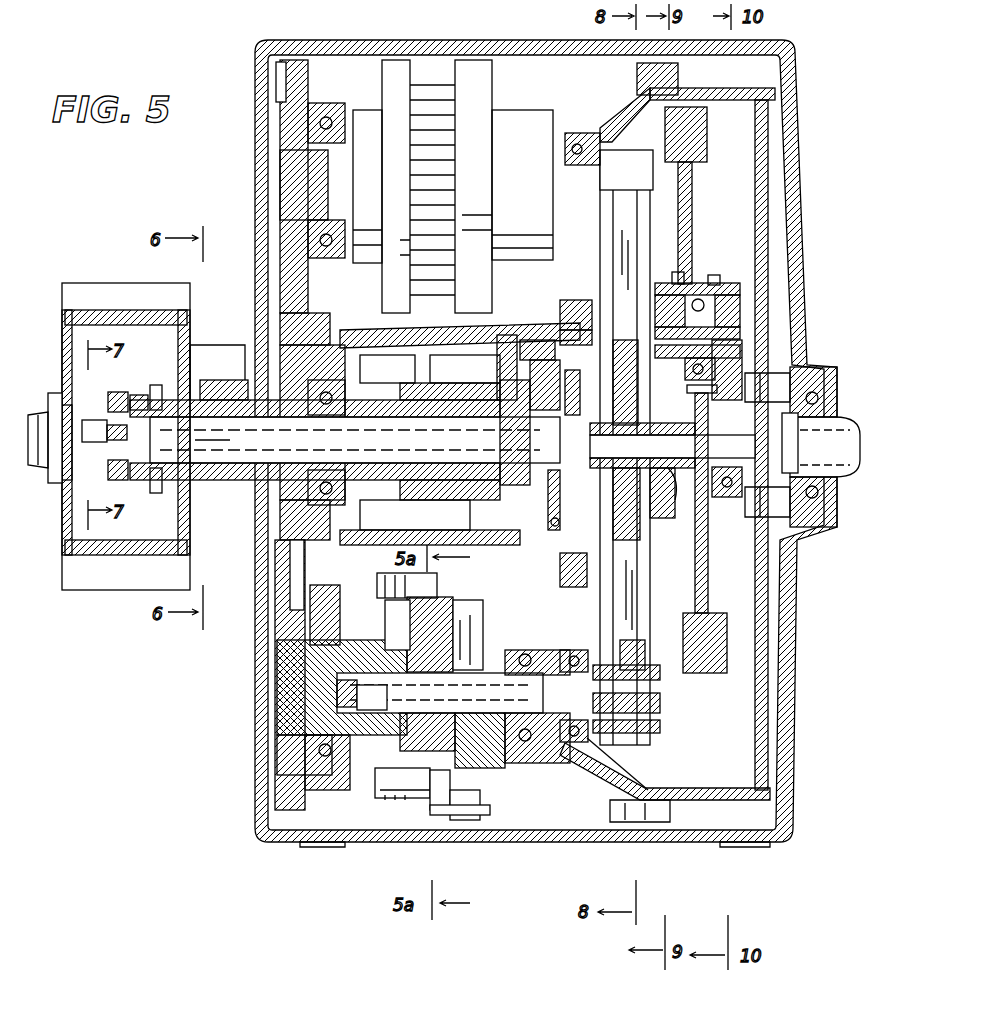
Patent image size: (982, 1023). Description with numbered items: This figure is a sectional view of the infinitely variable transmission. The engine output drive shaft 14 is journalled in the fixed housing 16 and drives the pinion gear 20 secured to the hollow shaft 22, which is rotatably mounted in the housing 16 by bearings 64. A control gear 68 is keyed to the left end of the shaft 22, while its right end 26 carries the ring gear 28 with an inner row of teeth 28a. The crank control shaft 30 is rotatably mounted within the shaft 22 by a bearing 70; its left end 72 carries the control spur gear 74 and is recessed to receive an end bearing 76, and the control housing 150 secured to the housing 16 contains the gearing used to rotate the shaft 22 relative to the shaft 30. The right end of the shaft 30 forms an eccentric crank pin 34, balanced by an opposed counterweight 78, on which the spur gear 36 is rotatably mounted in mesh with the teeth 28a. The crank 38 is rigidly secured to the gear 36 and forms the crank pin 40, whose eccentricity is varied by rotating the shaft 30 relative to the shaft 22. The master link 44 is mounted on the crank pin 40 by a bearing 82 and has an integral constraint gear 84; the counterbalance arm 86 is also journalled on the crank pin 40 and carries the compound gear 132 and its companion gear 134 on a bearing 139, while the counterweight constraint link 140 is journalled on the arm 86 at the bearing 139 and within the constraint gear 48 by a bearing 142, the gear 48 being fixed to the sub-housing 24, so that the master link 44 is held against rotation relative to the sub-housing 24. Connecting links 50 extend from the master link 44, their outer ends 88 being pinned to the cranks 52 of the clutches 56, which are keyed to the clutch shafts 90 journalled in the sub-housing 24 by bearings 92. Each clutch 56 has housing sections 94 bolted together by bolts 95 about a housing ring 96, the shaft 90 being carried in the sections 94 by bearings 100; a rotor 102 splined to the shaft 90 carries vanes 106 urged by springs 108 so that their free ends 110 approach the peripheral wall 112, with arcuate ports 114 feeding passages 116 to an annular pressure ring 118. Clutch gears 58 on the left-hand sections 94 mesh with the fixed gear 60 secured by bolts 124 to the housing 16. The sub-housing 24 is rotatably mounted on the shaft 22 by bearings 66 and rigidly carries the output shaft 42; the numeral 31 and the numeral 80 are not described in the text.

The output drive shaft 14 is at (35, 468).
The fixed housing 16 is at (395, 40).
The pinion gear 20 is at (215, 380).
The hollow shaft 22 is at (335, 448).
The sub-housing 24 is at (437, 335).
The end of shaft 22 26 is at (458, 417).
The ring gear 28 is at (572, 310).
The inner row of teeth 28a is at (592, 565).
The crank control shaft 30 is at (209, 438).
The hub 31 is at (282, 345).
The eccentric crank pin 34 is at (555, 360).
The spur gear 36 is at (588, 333).
The crank 38 is at (590, 470).
The crank pin 40 is at (695, 472).
The output shaft 42 is at (838, 425).
The master link 44 is at (672, 445).
The constraint gear 48 is at (733, 497).
The connecting links 50 is at (628, 633).
The cranks 52 is at (640, 235).
The clutches 56 is at (536, 95).
The clutch gears 58 is at (290, 785).
The fixed gear 60 is at (292, 560).
The bearings 64 is at (300, 417).
The bearings 66 is at (362, 378).
The control gear 68 is at (130, 392).
The bearing 70 is at (500, 425).
The left end of shaft 30 72 is at (102, 462).
The control spur gear 74 is at (120, 392).
The end bearing 76 is at (62, 495).
The counterweight 78 is at (590, 515).
The ring 80 is at (647, 655).
The bearing 82 is at (592, 488).
The constraint gear 84 is at (655, 500).
The counterbalance arm 86 is at (692, 210).
The outer ends of links 88 is at (648, 139).
The clutch shafts 90 is at (650, 713).
The bearings 92 is at (598, 743).
The clutch housing sections 94 is at (362, 775).
The bolts 95 is at (452, 822).
The housing ring 96 is at (418, 815).
The bearings 100 is at (345, 720).
The rotor 102 is at (455, 660).
The vanes 106 is at (455, 748).
The springs 108 is at (440, 693).
The free ends of vanes 110 is at (432, 822).
The peripheral wall 112 is at (470, 765).
The arcuate ports 114 is at (380, 605).
The passages 116 is at (388, 640).
The annular pressure ring 118 is at (380, 680).
The bolts 124 is at (360, 520).
The transfer or compound gear 132 is at (738, 290).
The companion gear 134 is at (678, 272).
The bearing 139 is at (718, 284).
The counterweight constraint link 140 is at (702, 613).
The bearing 142 is at (760, 448).
The control housing 150 is at (103, 268).